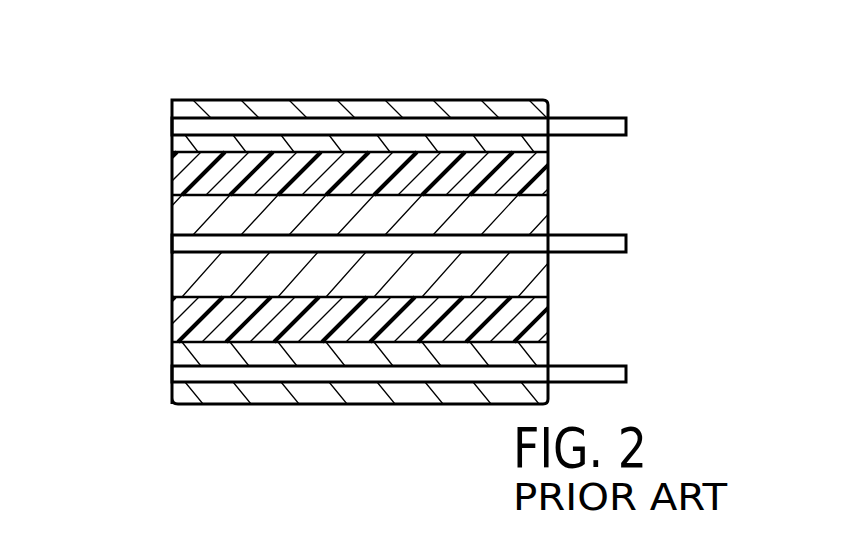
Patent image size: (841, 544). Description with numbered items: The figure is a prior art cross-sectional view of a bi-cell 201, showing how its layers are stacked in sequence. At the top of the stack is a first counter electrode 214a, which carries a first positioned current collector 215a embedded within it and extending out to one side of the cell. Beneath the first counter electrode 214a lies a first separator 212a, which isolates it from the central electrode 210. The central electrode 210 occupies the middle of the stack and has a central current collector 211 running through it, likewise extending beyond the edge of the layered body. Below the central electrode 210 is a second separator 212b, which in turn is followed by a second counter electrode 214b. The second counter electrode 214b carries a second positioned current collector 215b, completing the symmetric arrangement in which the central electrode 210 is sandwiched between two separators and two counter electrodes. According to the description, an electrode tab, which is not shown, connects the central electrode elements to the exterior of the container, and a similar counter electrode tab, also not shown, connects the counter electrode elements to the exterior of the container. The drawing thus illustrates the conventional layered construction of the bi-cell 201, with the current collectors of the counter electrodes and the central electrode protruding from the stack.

The bi-cell 201 is at (211, 93).
The central electrode 210 is at (192, 275).
The central current collector 211 is at (582, 232).
The first separator 212a is at (187, 173).
The second separator 212b is at (190, 318).
The first counter electrode 214a is at (174, 146).
The second counter electrode 214b is at (177, 392).
The first positioned current collector 215a is at (567, 117).
The second positioned current collector 215b is at (593, 363).